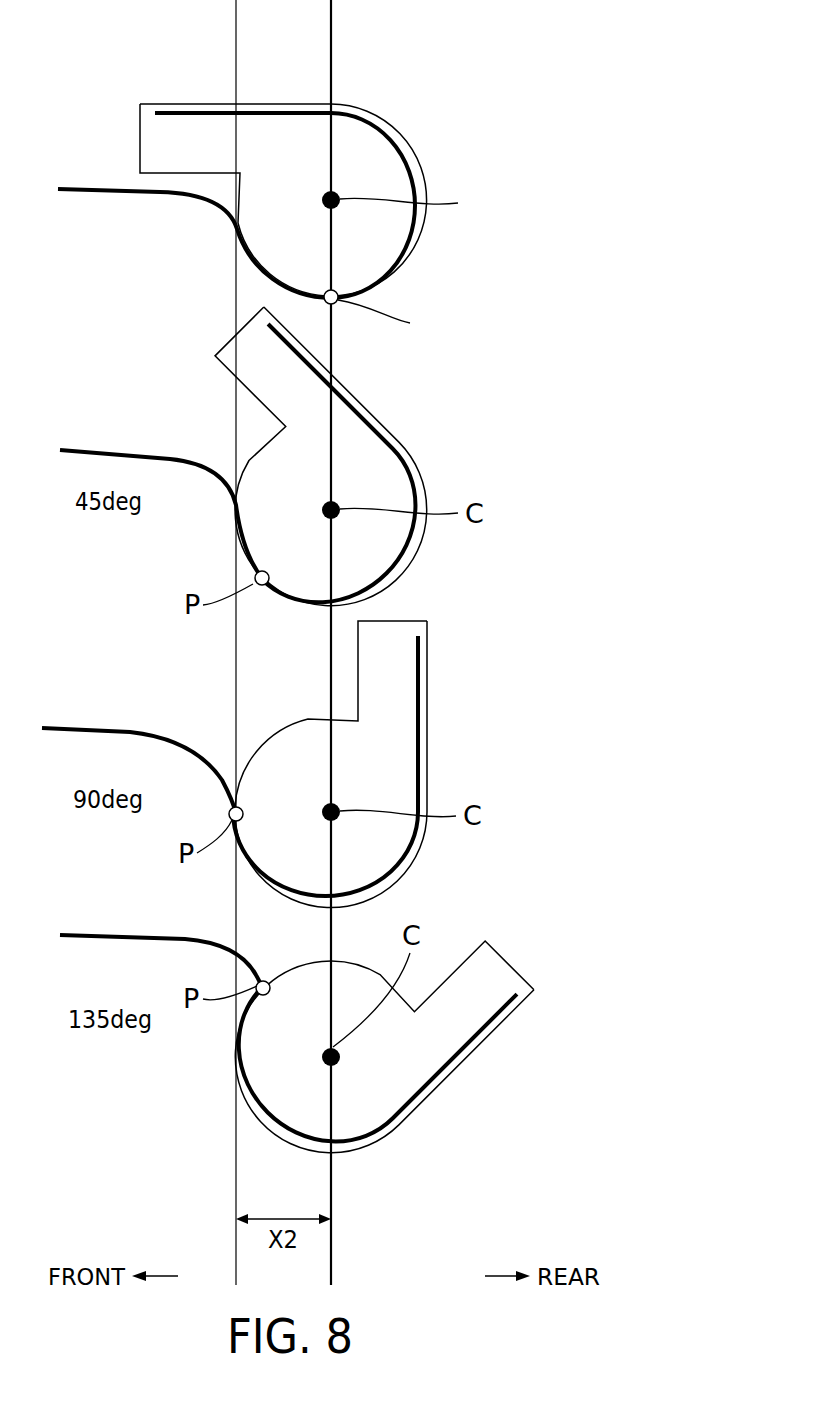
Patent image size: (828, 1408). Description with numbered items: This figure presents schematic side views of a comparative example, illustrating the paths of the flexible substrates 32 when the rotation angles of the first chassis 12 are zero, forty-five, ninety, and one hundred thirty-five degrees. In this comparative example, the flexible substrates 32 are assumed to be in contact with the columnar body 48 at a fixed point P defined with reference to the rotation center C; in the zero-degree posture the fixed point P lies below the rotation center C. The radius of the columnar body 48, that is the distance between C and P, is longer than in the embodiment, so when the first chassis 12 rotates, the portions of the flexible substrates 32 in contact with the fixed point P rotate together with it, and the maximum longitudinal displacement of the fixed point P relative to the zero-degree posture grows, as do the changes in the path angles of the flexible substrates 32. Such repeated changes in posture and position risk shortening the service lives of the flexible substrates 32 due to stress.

The first chassis 12 is at (208, 72).
The flexible substrates 32 is at (187, 200).
The columnar body 48 is at (370, 153).